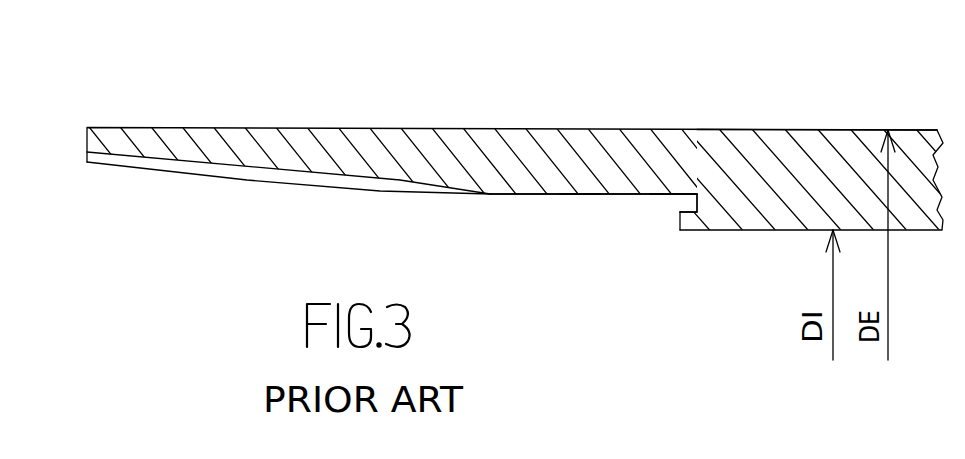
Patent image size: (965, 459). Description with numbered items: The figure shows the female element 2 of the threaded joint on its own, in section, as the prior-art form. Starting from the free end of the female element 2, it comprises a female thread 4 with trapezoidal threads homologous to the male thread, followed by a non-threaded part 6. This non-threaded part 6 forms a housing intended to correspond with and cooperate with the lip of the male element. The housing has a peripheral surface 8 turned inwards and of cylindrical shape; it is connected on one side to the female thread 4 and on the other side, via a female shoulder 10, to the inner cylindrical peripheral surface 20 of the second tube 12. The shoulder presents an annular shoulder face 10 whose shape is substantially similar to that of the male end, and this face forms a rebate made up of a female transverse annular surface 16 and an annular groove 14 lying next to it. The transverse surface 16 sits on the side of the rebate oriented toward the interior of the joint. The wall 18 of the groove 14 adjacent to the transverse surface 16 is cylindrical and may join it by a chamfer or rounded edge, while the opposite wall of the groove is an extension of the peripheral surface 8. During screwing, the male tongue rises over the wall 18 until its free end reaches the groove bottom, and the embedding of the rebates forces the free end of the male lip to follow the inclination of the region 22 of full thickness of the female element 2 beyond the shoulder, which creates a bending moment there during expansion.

The female element 2 is at (468, 103).
The female thread 4 is at (254, 180).
The non-threaded part 6 is at (590, 208).
The peripheral surface 8 is at (543, 195).
The female shoulder 10 is at (661, 228).
The second tube 12 is at (843, 138).
The annular groove 14 is at (684, 193).
The female transverse annular surface 16 is at (681, 229).
The wall of the groove 18 is at (680, 210).
The inner cylindrical peripheral surface 20 is at (743, 232).
The region of full thickness 22 is at (741, 167).